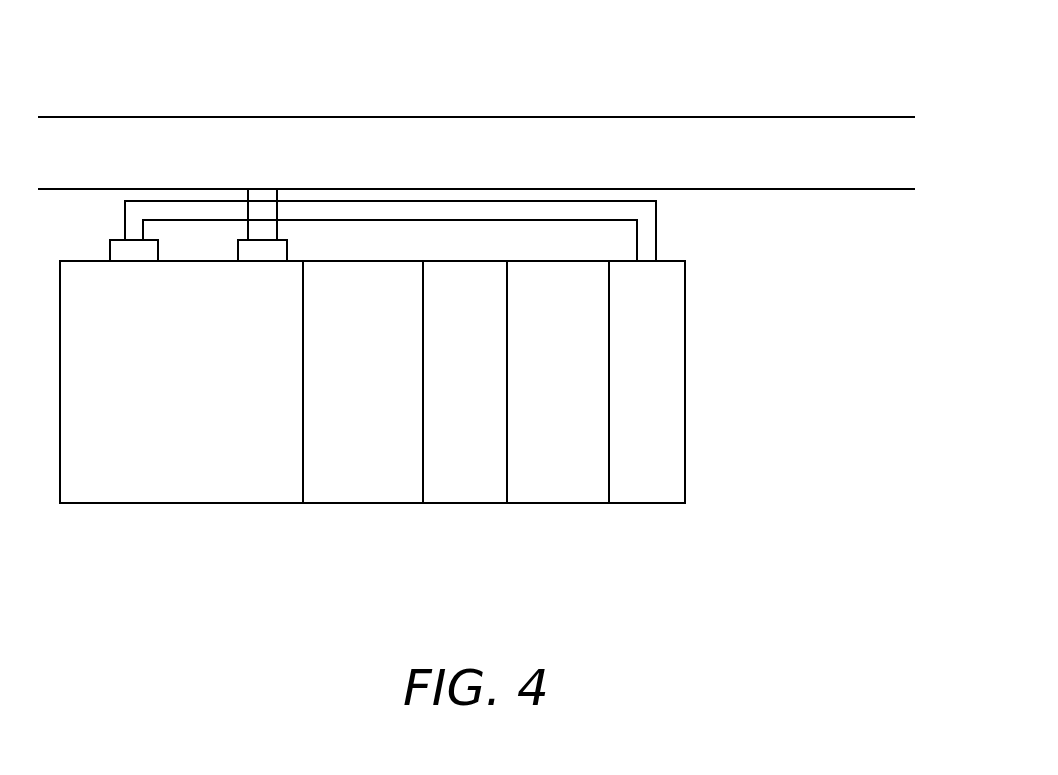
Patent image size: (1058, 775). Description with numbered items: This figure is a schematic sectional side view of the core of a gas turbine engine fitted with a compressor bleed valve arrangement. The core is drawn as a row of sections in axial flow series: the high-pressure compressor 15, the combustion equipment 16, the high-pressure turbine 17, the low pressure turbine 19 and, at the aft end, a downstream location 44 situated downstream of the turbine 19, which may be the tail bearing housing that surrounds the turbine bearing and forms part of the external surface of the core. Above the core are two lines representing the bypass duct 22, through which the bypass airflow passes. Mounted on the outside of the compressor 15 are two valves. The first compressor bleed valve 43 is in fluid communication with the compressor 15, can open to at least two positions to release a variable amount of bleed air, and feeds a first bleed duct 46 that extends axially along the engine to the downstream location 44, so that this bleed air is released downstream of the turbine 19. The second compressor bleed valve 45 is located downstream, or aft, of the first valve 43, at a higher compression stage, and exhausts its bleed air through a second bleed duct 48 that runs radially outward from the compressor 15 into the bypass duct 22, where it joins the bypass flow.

The bypass duct 22 is at (690, 140).
The second bleed duct 48 is at (276, 214).
The first compressor bleed valve 43 is at (117, 247).
The second compressor bleed valve 45 is at (280, 247).
The first bleed duct 46 is at (642, 218).
The high-pressure compressor 15 is at (187, 482).
The combustion equipment 16 is at (368, 482).
The high-pressure turbine 17 is at (470, 482).
The low pressure turbine 19 is at (560, 482).
The downstream location 44 is at (652, 482).